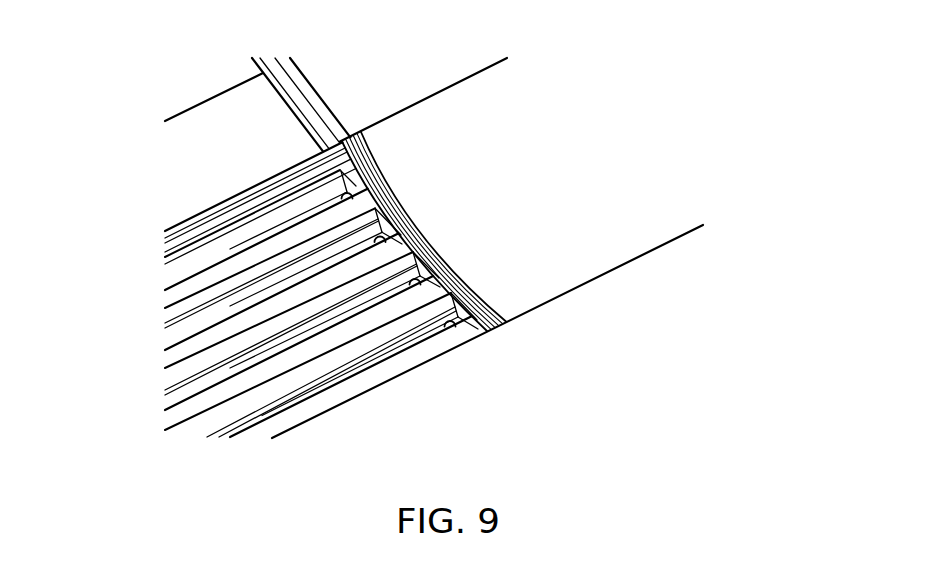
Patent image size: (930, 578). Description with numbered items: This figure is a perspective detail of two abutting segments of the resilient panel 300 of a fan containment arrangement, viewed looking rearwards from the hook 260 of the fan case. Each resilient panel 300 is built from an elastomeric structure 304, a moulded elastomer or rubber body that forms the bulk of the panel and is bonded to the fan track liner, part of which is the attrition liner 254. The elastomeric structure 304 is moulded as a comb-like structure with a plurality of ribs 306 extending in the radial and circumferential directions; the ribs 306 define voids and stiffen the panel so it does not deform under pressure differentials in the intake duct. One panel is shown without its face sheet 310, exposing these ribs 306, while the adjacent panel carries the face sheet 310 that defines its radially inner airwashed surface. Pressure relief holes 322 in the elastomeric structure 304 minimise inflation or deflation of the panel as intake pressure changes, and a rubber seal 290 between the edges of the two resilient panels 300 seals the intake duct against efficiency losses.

The attrition liner 254 is at (277, 150).
The hook 260 is at (610, 392).
The rubber seal 290 is at (386, 187).
The resilient panel 300 is at (591, 232).
The elastomeric structure 304 is at (222, 250).
The ribs 306 is at (258, 320).
The face sheet 310 is at (634, 150).
The pressure relief holes 322 is at (341, 141).